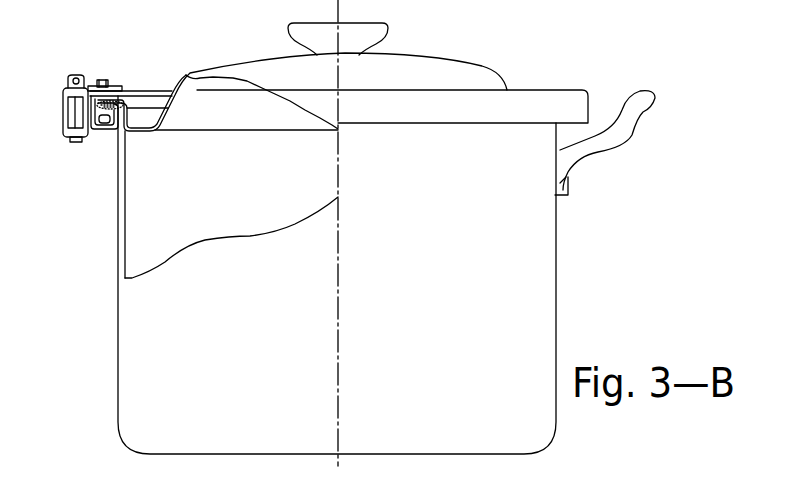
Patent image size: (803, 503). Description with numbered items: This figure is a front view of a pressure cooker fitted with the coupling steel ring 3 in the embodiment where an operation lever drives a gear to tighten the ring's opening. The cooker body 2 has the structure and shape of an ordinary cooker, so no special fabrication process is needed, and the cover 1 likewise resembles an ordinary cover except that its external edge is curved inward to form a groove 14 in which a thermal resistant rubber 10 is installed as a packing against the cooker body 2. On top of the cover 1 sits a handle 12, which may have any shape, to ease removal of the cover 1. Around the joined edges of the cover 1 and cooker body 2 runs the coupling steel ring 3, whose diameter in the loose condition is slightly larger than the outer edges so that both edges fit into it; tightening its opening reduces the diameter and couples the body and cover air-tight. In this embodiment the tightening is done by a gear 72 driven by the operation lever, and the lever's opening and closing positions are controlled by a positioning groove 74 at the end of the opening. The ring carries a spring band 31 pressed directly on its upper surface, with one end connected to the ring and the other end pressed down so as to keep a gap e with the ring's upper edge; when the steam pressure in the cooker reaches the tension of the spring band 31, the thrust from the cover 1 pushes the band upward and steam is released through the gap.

The cover 1 is at (478, 74).
The cooker body 2 is at (553, 285).
The coupling steel ring 3 is at (553, 100).
The thermal resistant rubber 10 is at (143, 86).
The handle 12 is at (360, 53).
The groove 14 is at (85, 142).
The spring band 31 is at (113, 89).
The gear 72 is at (70, 110).
The positioning groove 74 is at (99, 79).
The gap e is at (146, 104).